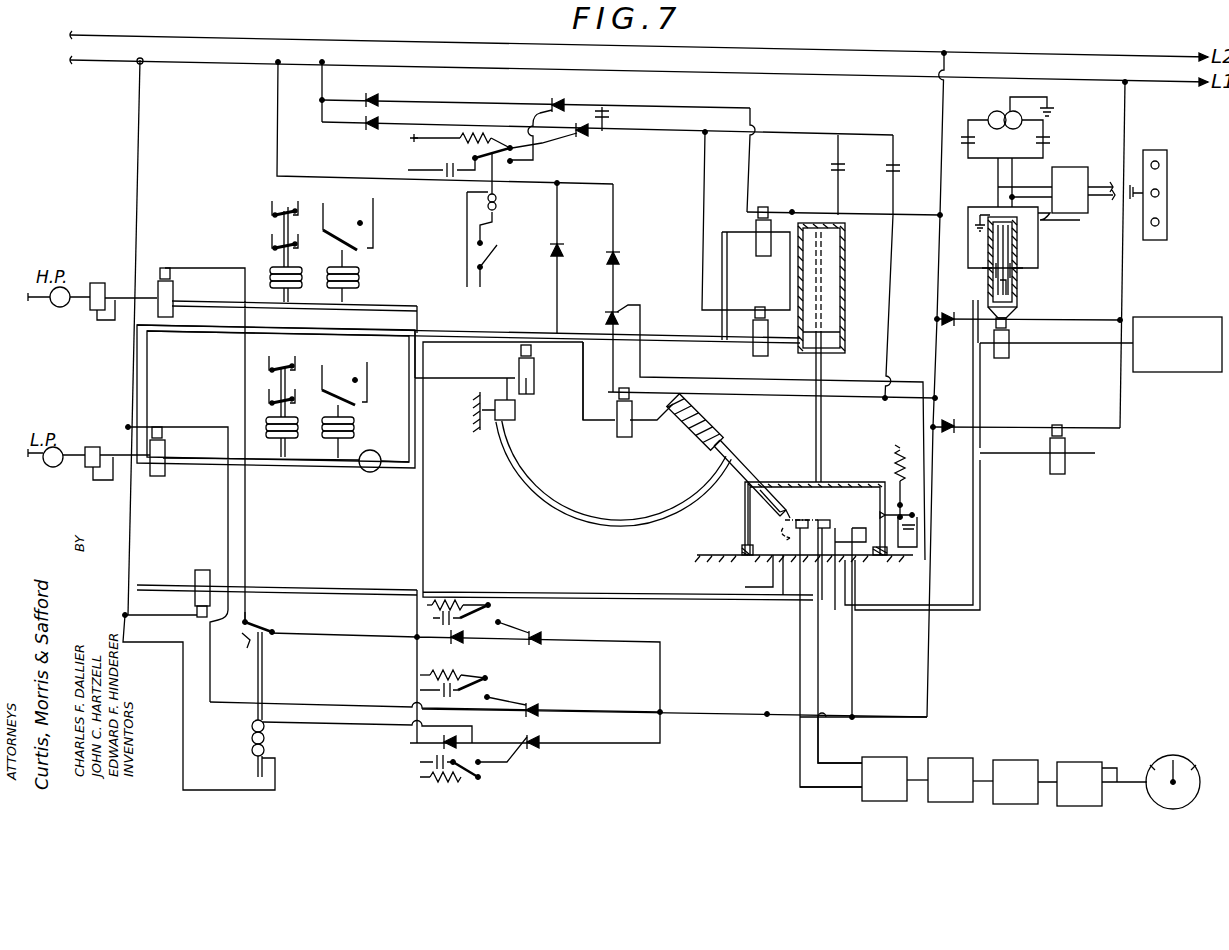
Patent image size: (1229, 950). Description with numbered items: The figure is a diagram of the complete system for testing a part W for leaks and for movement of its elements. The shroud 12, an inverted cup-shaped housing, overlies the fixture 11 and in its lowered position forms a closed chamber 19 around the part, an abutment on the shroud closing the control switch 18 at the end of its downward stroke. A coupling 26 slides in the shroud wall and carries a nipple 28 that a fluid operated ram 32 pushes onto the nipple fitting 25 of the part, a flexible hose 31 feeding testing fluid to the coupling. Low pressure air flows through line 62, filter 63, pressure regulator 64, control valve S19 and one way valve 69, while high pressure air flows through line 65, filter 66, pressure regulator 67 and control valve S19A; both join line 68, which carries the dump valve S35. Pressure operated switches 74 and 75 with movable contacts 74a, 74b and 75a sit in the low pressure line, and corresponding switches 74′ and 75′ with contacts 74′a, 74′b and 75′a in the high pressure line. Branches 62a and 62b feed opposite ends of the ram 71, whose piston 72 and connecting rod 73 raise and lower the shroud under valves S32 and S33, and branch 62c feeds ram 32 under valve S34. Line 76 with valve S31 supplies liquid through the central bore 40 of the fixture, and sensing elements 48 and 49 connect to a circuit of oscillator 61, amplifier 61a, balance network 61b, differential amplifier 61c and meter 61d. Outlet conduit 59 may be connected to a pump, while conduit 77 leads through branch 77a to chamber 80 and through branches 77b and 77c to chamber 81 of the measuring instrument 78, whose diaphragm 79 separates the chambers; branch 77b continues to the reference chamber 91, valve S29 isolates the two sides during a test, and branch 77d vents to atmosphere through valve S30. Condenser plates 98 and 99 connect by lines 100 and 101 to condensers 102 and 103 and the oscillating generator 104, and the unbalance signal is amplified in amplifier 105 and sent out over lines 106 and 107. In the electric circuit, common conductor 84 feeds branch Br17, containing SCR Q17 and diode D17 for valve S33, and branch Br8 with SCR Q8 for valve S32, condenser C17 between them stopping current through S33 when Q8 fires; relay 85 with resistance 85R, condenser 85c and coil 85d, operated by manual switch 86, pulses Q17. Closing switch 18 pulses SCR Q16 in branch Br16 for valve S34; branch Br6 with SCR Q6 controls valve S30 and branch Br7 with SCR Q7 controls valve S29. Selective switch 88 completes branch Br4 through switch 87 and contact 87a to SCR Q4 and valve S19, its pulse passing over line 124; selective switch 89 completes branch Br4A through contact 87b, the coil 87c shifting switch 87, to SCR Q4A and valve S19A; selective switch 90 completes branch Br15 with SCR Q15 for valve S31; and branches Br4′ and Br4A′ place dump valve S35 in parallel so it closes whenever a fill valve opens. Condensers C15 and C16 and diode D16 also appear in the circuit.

The fixture 11 is at (835, 528).
The shroud 12 is at (868, 482).
The control switch 18 is at (905, 505).
The closed chamber 19 is at (745, 510).
The nipple fitting 25 is at (790, 515).
The coupling 26 is at (745, 455).
The nipple 28 is at (780, 490).
The flexible hose 31 is at (620, 515).
The fluid operated ram 32 is at (692, 440).
The central bore 40 is at (772, 570).
The sensing elements 48 is at (795, 522).
The sensing elements 49 is at (830, 519).
The outlet conduit 59 is at (745, 587).
The oscillator 61 is at (896, 762).
The amplifier 61a is at (958, 763).
The balance network 61b is at (1030, 750).
The differential amplifier 61c is at (1085, 765).
The meter 61d is at (1160, 800).
The low pressure line 62 is at (45, 462).
The branch 62a is at (152, 400).
The branch 62b is at (722, 325).
The branch 62c is at (580, 403).
The filter 63 is at (60, 448).
The pressure regulator 64 is at (93, 447).
The high pressure line 65 is at (50, 302).
The filter 66 is at (62, 308).
The pressure regulator 67 is at (122, 289).
The line 68 is at (482, 372).
The one way valve 69 is at (362, 470).
The fluid operated ram 71 is at (845, 268).
The piston 72 is at (835, 338).
The connecting rod 73 is at (825, 350).
The pressure operated double pole double throw switch 74 is at (257, 398).
The movable contact 74a is at (268, 430).
The movable contact 74b is at (280, 368).
The pressure operated switch 74′ is at (268, 258).
The movable contact 74′a is at (272, 245).
The movable contact 74′b is at (280, 208).
The pressure operated single pole single throw switch 75 is at (360, 387).
The movable contact 75a is at (350, 418).
The pressure operated switch 75′ is at (362, 250).
The movable contact 75′a is at (364, 237).
The line 76 is at (398, 590).
The conduit 77 is at (978, 592).
The branch 77a is at (968, 325).
The branch 77b is at (1072, 348).
The branch 77c is at (1012, 327).
The branch conduit 77d is at (1032, 458).
The measuring instrument 78 is at (1015, 274).
The diaphragm 79 is at (1012, 290).
The chamber 80 is at (988, 233).
The chamber 81 is at (1010, 236).
The common connection 84 is at (944, 125).
The relay 85 is at (515, 163).
The condenser 85c is at (441, 177).
The relay coil 85d is at (497, 206).
The resistance 85R is at (460, 128).
The manually operable switch 86 is at (498, 260).
The switch 87 is at (268, 626).
The contact 87a is at (258, 612).
The contact 87b is at (246, 645).
The coil 87c is at (242, 748).
The selective switch 88 is at (466, 610).
The selective switch 89 is at (486, 775).
The selective switch 90 is at (500, 690).
The reference chamber 91 is at (1170, 372).
The condenser plate 98 is at (990, 274).
The condenser plate 99 is at (1020, 262).
The electric line 100 is at (980, 210).
The electric line 101 is at (1076, 223).
The condenser 102 is at (965, 143).
The condenser 103 is at (1050, 138).
The oscillating generator 104 is at (1006, 110).
The amplifier 105 is at (1078, 168).
The line 106 is at (1112, 186).
The line 107 is at (1110, 200).
The line 124 is at (328, 632).
The branch Br4 is at (605, 642).
The branch Br4′ is at (425, 530).
The branch Br4A is at (596, 755).
The branch Br4A′ is at (395, 690).
The branch Br6 is at (1038, 428).
The branch Br7 is at (1110, 318).
The branch Br8 is at (700, 228).
The branch Br15 is at (578, 706).
The branch Br16 is at (662, 392).
The branch Br17 is at (775, 200).
The capacitor C15 is at (840, 170).
The capacitor C16 is at (897, 172).
The condenser C17 is at (620, 105).
The diode D16 is at (620, 260).
The one way diode D17 is at (607, 103).
The silicon controlled rectifier Q4 is at (540, 632).
The silicon controlled rectifier Q4A is at (504, 758).
The silicon controlled rectifier Q6 is at (968, 440).
The silicon controlled rectifier Q7 is at (948, 308).
The silicon controlled rectifier Q8 is at (563, 142).
The silicon controlled rectifier Q15 is at (535, 716).
The silicon controlled rectifier Q16 is at (606, 318).
The silicon controlled rectifier Q17 is at (556, 117).
The control valve S19 is at (160, 475).
The control valve S19A is at (287, 445).
The solenoid controlled valve S29 is at (1003, 360).
The solenoid controlled valve S30 is at (1058, 474).
The control valve S31 is at (197, 585).
The solenoid operated valve S32 is at (768, 358).
The solenoid operated valve S33 is at (754, 244).
The solenoid actuated control valve S34 is at (628, 437).
The dump valve S35 is at (535, 380).